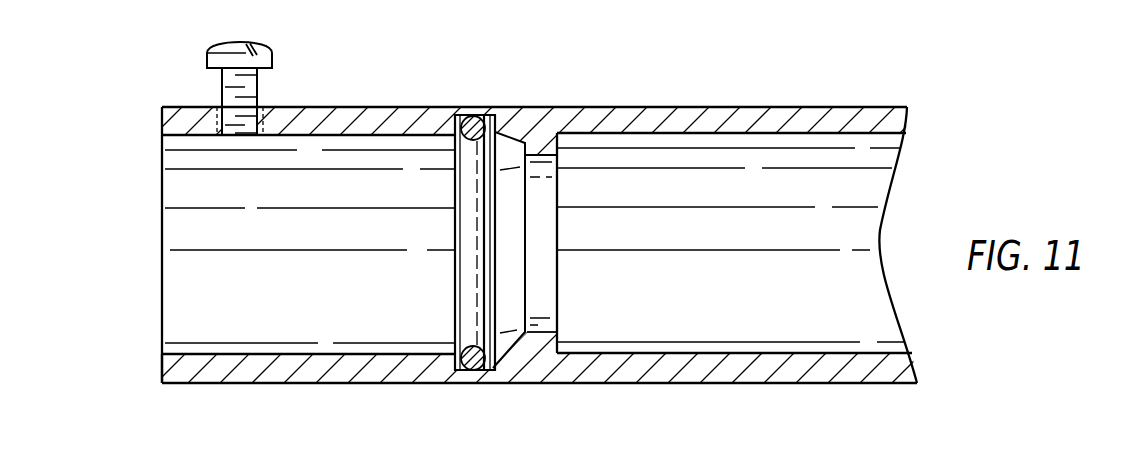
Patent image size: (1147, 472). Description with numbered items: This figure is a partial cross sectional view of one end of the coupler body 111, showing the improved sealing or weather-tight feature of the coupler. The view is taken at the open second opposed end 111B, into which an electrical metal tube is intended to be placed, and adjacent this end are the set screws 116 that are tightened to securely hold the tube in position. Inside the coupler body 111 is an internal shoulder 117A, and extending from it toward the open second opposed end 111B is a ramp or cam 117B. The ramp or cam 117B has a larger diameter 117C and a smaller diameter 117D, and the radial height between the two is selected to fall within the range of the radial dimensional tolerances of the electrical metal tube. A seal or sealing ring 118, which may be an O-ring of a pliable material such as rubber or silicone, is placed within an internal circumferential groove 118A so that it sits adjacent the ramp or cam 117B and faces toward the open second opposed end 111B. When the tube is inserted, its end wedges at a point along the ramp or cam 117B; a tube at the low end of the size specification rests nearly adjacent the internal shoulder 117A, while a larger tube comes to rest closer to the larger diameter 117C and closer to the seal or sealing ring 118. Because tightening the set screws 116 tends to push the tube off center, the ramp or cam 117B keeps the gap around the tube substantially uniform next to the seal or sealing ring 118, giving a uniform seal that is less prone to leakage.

The coupler body 111 is at (677, 90).
The second opposed end 111B is at (163, 368).
The set screws 116 is at (263, 58).
The internal shoulder 117A is at (547, 192).
The ramp or cam 117B is at (507, 345).
The larger diameter 117C is at (497, 133).
The smaller diameter 117D is at (528, 129).
The seal or sealing ring 118 is at (497, 372).
The internal circumferential groove 118A is at (459, 114).